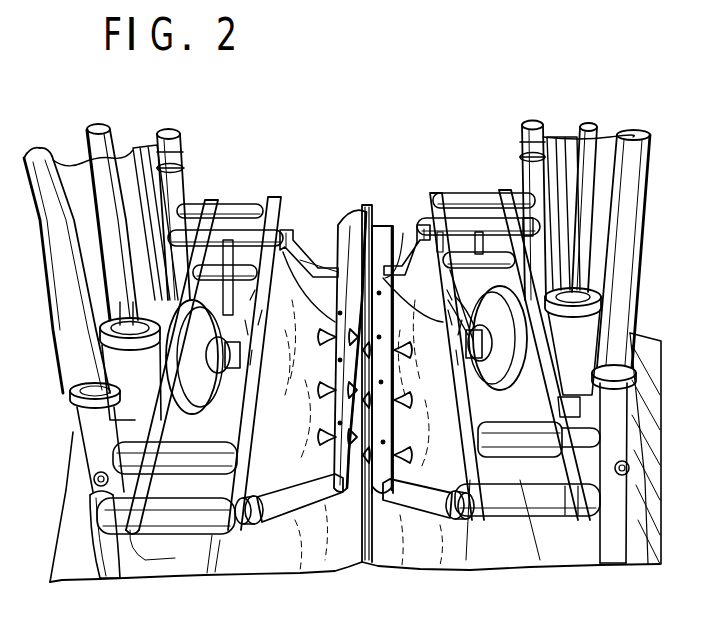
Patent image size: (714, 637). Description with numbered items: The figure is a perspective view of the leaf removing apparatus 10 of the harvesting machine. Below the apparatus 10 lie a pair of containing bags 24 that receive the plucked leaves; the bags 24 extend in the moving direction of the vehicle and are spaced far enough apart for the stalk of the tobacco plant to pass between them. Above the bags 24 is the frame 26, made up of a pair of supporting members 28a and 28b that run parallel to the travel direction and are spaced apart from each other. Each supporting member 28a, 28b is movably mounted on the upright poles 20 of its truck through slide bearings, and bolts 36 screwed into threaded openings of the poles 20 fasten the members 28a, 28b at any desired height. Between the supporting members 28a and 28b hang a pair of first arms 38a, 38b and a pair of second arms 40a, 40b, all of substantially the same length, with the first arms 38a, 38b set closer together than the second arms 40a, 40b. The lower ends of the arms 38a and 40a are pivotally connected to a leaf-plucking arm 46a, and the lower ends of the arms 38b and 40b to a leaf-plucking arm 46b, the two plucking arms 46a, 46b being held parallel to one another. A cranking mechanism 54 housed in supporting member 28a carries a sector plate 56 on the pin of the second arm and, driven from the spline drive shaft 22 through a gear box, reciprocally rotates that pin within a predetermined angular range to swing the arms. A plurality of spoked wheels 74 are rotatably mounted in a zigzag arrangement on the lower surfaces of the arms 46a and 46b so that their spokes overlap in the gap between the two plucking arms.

The leaf removing apparatus 10 is at (420, 145).
The poles 20 is at (178, 143).
The drive shaft 22 is at (123, 298).
The containing bags 24 is at (260, 560).
The frame 26 is at (180, 553).
The supporting member 28a is at (249, 197).
The supporting member 28b is at (464, 196).
The bolts 36 is at (95, 479).
The first arm 38a is at (293, 505).
The first arm 38b is at (408, 505).
The second arm 40a is at (300, 233).
The second arm 40b is at (410, 228).
The leaf-plucking arm 46a is at (340, 225).
The leaf-plucking arm 46b is at (380, 225).
The cranking mechanism 54 is at (190, 413).
The sector plate 56 is at (533, 412).
The wheels 74 is at (317, 430).